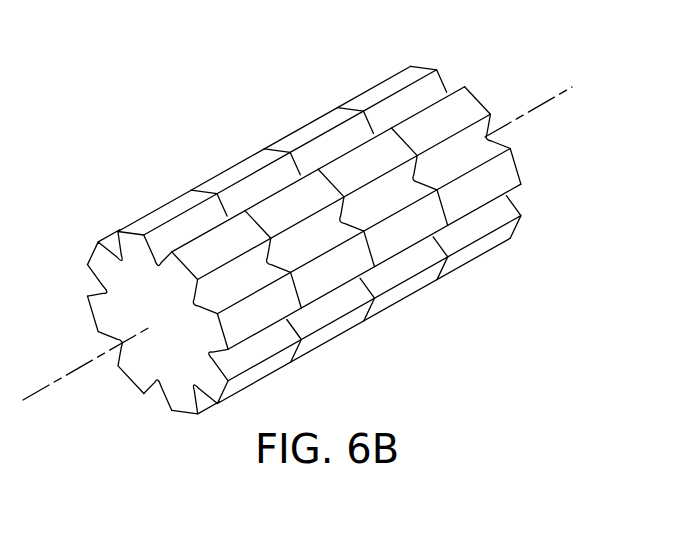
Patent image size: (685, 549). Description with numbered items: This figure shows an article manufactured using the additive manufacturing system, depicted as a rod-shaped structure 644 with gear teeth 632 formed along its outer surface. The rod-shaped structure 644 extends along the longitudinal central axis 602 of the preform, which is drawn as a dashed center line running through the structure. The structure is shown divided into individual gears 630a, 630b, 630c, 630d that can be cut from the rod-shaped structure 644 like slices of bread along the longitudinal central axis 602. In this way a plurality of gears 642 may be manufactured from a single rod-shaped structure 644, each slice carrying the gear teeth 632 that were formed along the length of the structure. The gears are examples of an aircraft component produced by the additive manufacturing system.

The longitudinal central axis 602 is at (62, 378).
The gear 630a is at (146, 218).
The gear 630b is at (219, 176).
The gear 630c is at (291, 136).
The gear 630d is at (361, 93).
The gear teeth 632 is at (150, 381).
The plurality of gears 642 is at (553, 142).
The rod-shaped structure 644 is at (520, 250).